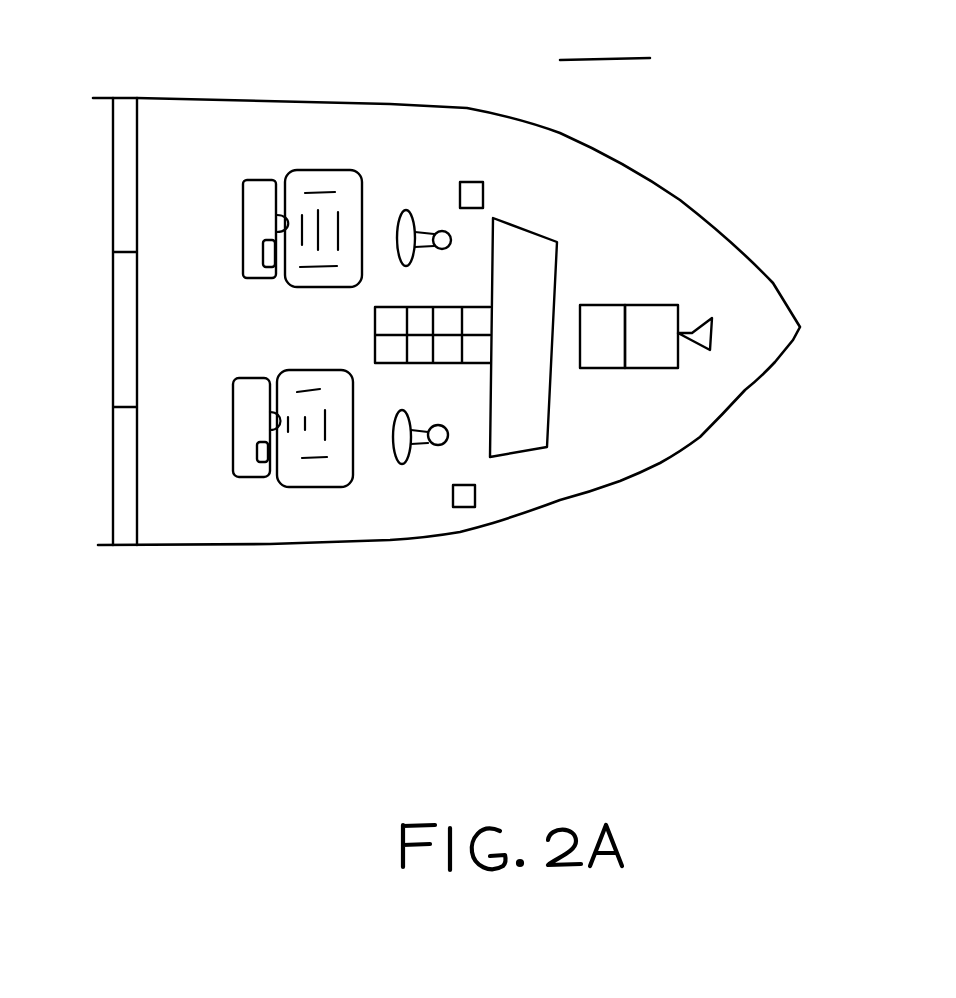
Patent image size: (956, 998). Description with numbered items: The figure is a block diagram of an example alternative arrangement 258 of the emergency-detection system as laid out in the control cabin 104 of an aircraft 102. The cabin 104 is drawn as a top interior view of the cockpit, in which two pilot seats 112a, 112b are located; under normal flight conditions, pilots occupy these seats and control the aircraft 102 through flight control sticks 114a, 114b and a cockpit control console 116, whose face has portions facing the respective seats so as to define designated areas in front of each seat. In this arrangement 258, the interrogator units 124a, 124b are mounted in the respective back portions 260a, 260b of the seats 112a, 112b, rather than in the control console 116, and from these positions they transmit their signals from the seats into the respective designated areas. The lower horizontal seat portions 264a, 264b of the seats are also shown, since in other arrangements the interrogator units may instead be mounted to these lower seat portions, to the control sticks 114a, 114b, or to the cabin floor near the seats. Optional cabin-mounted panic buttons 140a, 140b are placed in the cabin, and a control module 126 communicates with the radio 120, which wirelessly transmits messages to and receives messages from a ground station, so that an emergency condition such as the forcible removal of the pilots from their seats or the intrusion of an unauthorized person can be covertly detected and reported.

The alternative arrangement 258 is at (642, 33).
The aircraft 102 is at (154, 710).
The control cabin 104 is at (268, 545).
The seat 112a is at (176, 145).
The seat 112b is at (166, 335).
The interrogator unit 124a is at (187, 280).
The interrogator unit 124b is at (188, 488).
The back portion 260a is at (278, 225).
The back portion 260b is at (272, 430).
The lower horizontal seat portion 264a is at (273, 121).
The lower horizontal seat portion 264b is at (281, 332).
The flight control stick 114a is at (396, 123).
The flight control stick 114b is at (363, 490).
The panic button 140a is at (598, 207).
The panic button 140b is at (570, 497).
The cockpit control console 116 is at (553, 272).
The control module 126 is at (615, 422).
The radio 120 is at (708, 393).